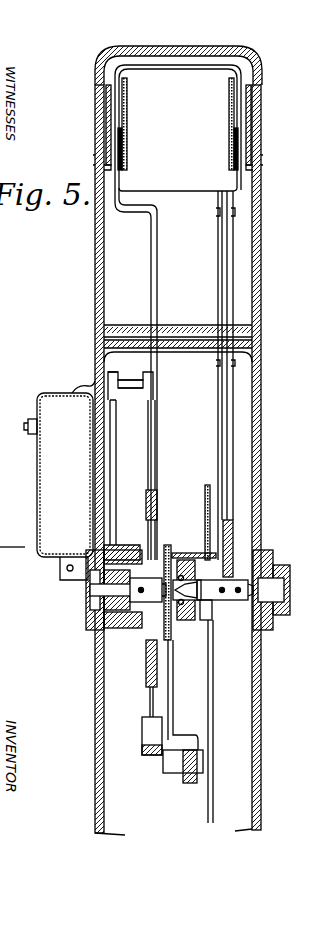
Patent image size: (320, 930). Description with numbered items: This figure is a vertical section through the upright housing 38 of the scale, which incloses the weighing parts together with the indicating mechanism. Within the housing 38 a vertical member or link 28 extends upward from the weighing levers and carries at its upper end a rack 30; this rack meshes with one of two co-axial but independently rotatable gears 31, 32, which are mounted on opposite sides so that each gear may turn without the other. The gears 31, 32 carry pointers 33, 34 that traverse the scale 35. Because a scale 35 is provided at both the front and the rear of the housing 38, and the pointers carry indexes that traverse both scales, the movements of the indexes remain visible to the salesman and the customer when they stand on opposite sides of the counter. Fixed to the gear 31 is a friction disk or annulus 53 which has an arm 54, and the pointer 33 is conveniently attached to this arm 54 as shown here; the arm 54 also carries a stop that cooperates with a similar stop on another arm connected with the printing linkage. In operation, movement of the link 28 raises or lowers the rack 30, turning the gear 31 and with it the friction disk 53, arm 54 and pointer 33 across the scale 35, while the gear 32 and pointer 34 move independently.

The vertical member or link 28 is at (212, 707).
The rack 30 is at (204, 501).
The gear 31 is at (168, 620).
The gear 32 is at (230, 603).
The pointer 33 is at (156, 262).
The pointer 34 is at (225, 179).
The scale 35 is at (228, 96).
The upright housing 38 is at (259, 491).
The friction disk or annulus 53 is at (147, 520).
The arm 54 is at (156, 453).